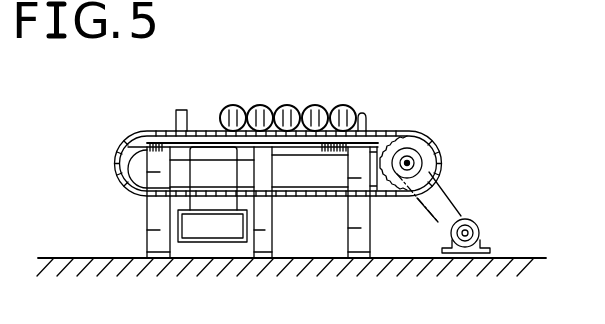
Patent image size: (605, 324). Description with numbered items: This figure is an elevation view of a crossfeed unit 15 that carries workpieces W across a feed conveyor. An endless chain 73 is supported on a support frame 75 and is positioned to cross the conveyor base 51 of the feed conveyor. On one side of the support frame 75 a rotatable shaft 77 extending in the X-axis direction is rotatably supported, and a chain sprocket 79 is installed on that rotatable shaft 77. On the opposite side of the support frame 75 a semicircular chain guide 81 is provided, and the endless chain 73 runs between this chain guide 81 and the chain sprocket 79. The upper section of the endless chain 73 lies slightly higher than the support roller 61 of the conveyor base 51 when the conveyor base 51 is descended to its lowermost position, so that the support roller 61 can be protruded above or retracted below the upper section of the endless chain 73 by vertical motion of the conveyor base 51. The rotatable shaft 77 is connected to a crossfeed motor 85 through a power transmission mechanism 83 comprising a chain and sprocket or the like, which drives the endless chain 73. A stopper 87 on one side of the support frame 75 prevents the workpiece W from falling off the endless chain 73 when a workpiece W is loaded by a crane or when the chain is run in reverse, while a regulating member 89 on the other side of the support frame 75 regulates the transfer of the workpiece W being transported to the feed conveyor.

The conveyor unit 15 is at (458, 130).
The conveyor base 51 is at (199, 243).
The support roller 61 is at (206, 130).
The endless chain 73 is at (307, 197).
The support frame 75 is at (143, 218).
The rotatable shaft 77 is at (423, 155).
The chain sprocket 79 is at (421, 132).
The semicircular chain guide 81 is at (118, 172).
The power transmission mechanism 83 is at (428, 211).
The crossfeed motor 85 is at (480, 232).
The stopper 87 is at (368, 118).
The regulating member 89 is at (176, 117).
The workpiece W is at (341, 101).